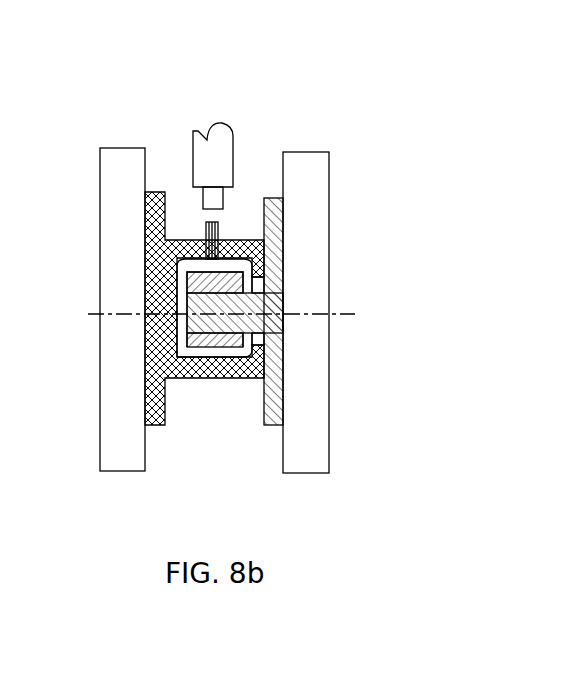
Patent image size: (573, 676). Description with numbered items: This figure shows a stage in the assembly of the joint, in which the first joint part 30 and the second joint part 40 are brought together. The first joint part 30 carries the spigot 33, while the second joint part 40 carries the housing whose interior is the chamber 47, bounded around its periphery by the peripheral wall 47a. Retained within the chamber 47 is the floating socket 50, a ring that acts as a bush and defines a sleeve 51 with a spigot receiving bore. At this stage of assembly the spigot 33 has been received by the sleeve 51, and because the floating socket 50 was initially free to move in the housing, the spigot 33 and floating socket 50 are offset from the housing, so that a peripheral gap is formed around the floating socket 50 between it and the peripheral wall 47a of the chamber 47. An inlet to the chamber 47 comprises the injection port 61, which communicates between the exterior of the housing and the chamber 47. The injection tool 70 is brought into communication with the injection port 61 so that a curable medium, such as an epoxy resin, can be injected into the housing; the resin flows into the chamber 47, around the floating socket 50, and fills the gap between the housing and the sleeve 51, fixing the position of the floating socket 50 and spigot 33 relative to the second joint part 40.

The first joint part 30 is at (298, 97).
The spigot 33 is at (265, 310).
The second joint part 40 is at (117, 112).
The chamber 47 is at (182, 270).
The peripheral wall 47a is at (242, 258).
The floating socket 50 is at (213, 350).
The sleeve 51 is at (223, 350).
The injection port 61 is at (214, 224).
The injection tool 70 is at (210, 143).